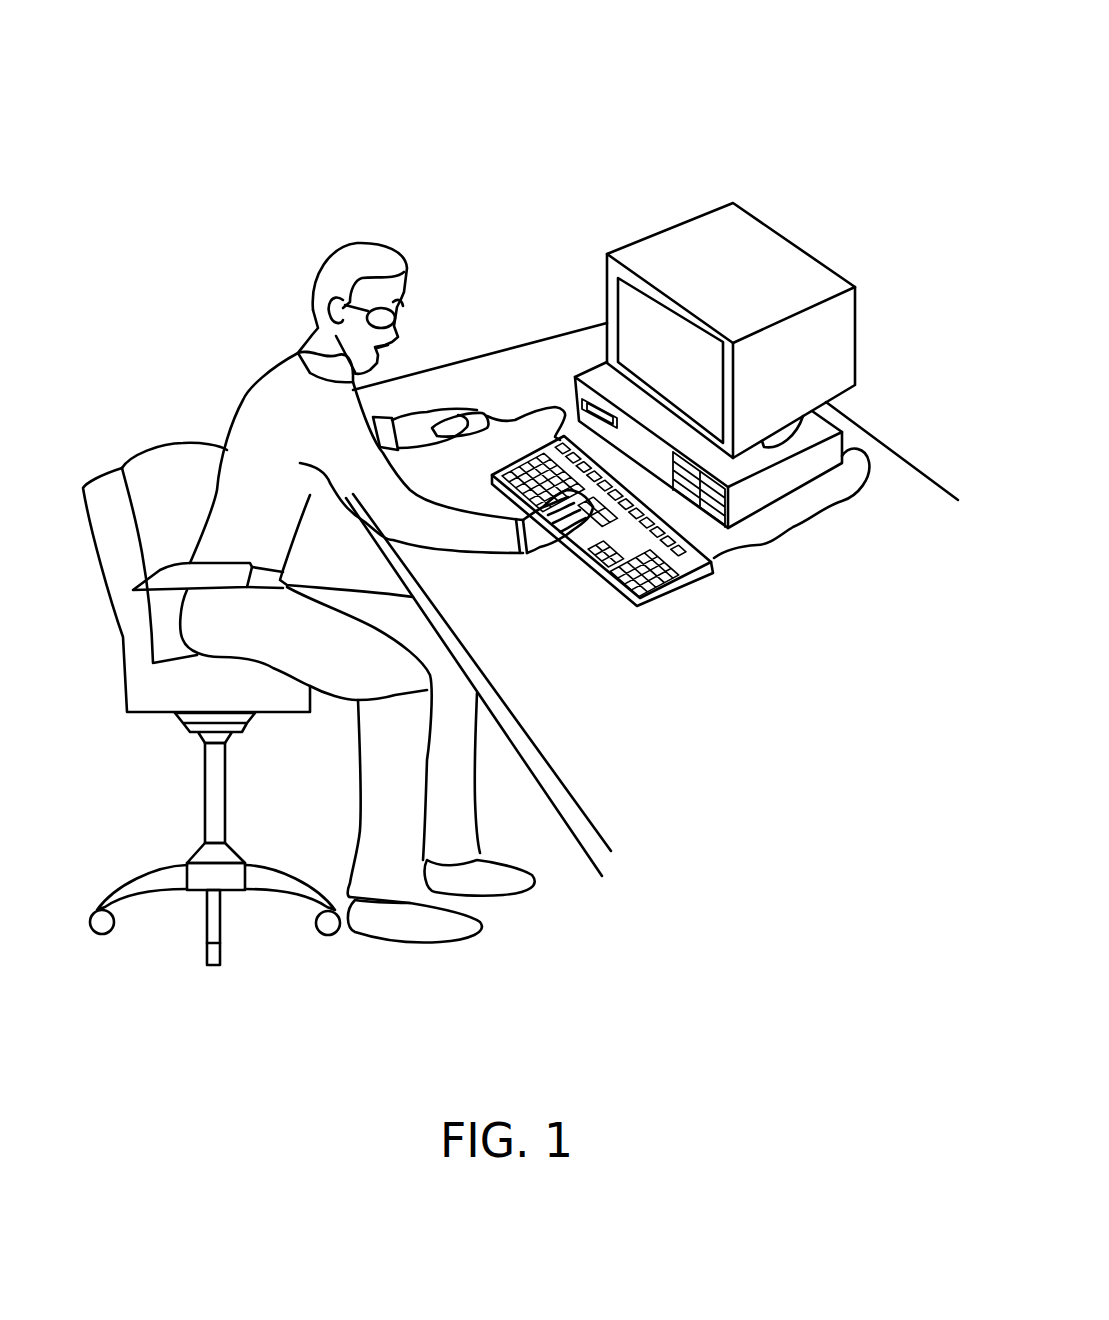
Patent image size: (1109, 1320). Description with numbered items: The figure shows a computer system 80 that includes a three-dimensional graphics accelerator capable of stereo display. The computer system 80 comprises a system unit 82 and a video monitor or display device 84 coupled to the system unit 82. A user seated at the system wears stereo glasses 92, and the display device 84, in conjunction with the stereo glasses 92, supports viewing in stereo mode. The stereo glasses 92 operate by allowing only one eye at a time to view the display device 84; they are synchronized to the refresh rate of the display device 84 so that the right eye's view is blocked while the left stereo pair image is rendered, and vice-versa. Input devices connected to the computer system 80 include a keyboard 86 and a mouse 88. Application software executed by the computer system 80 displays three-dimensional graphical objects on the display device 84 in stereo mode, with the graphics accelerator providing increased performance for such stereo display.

The computer system 80 is at (652, 96).
The system unit 82 is at (825, 463).
The display device 84 is at (747, 247).
The keyboard 86 is at (657, 580).
The mouse 88 is at (483, 413).
The stereo glasses 92 is at (385, 318).